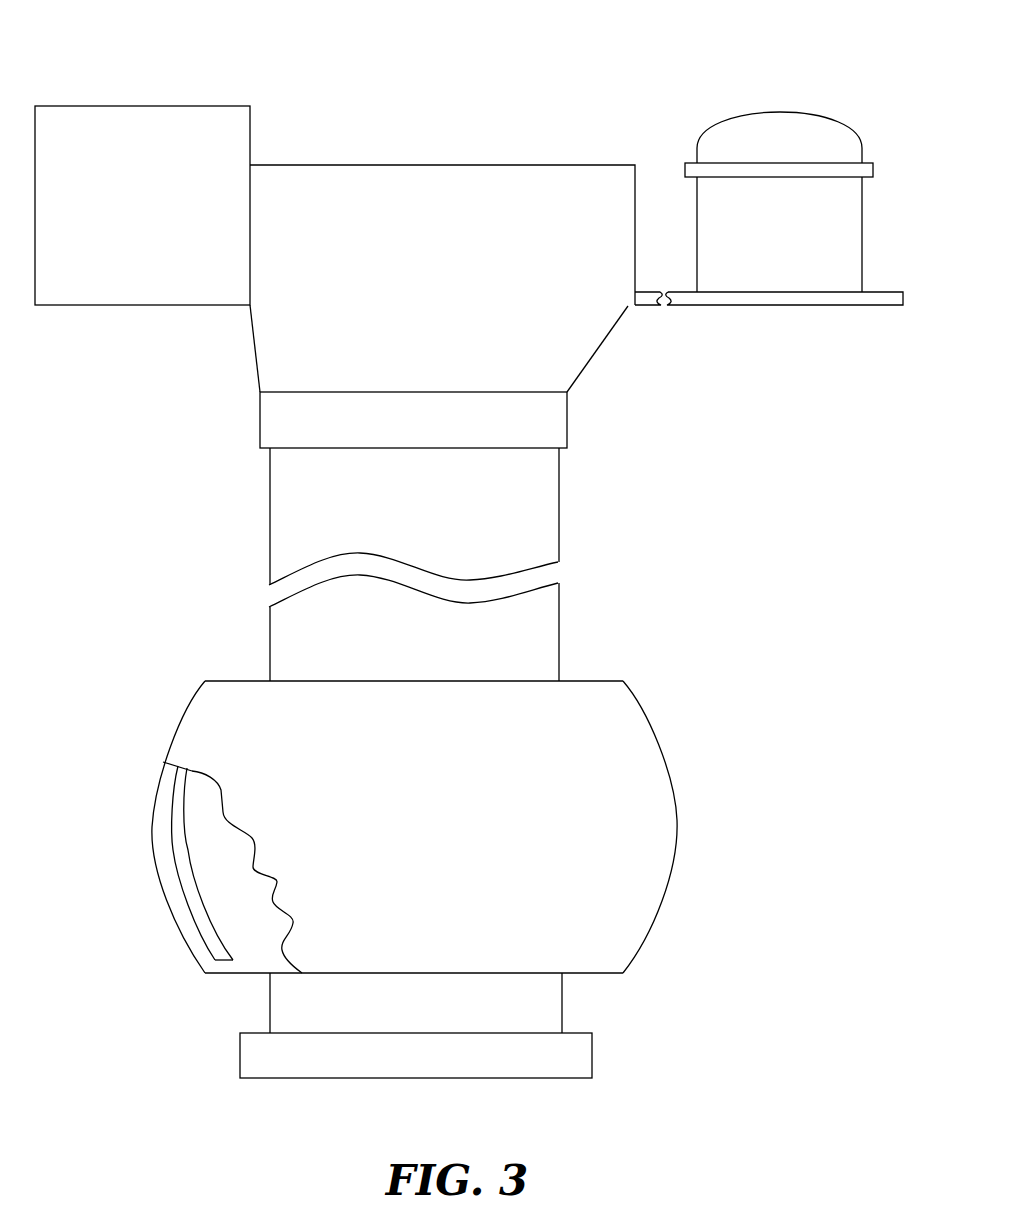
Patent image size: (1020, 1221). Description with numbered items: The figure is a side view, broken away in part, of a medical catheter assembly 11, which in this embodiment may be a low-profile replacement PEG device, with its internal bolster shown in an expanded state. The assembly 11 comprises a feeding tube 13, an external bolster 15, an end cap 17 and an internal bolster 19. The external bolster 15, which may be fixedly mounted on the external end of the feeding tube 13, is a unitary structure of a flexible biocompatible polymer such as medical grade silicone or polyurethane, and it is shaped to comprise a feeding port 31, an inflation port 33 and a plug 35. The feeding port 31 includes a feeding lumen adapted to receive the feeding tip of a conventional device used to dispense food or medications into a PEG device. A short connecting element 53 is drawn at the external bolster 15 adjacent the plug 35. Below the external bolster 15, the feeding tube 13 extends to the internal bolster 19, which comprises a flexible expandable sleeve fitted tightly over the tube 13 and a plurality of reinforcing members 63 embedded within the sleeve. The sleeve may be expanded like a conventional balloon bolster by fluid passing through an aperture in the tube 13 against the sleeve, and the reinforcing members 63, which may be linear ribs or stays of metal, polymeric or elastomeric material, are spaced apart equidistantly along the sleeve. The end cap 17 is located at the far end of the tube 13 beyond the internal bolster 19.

The assembly 11 is at (684, 537).
The feeding tube 13 is at (584, 622).
The external bolster 15 is at (605, 372).
The end cap 17 is at (610, 1057).
The internal bolster 19 is at (699, 818).
The feeding port 31 is at (533, 155).
The inflation port 33 is at (141, 93).
The plug 35 is at (783, 138).
The connection conduit with break 53 is at (675, 292).
The reinforcing members 63 is at (188, 900).